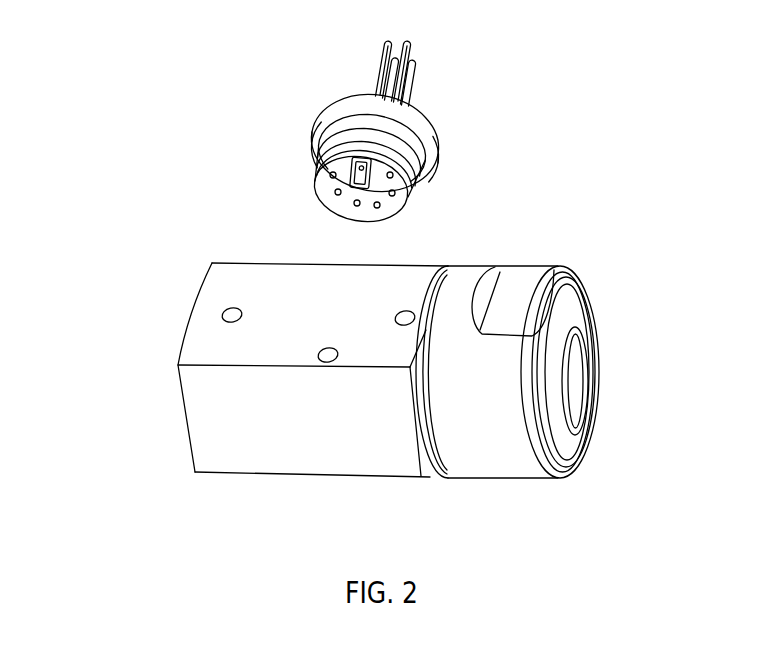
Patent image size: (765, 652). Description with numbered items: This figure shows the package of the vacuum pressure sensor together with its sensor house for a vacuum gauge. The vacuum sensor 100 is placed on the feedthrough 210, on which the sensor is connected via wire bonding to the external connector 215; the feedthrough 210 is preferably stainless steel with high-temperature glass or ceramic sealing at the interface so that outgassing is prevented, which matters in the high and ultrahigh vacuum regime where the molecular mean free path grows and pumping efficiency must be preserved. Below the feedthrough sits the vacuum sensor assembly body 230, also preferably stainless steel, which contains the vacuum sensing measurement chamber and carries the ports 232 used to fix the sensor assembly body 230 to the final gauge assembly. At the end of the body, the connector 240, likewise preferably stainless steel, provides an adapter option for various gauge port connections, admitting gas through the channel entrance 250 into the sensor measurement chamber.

The vacuum sensor 100 is at (358, 173).
The feedthrough 210 is at (404, 124).
The external connector 215 is at (383, 65).
The vacuum sensor assembly body 230 is at (225, 287).
The ports 232 is at (223, 315).
The connector 240 is at (515, 298).
The channel entrance 250 is at (575, 378).